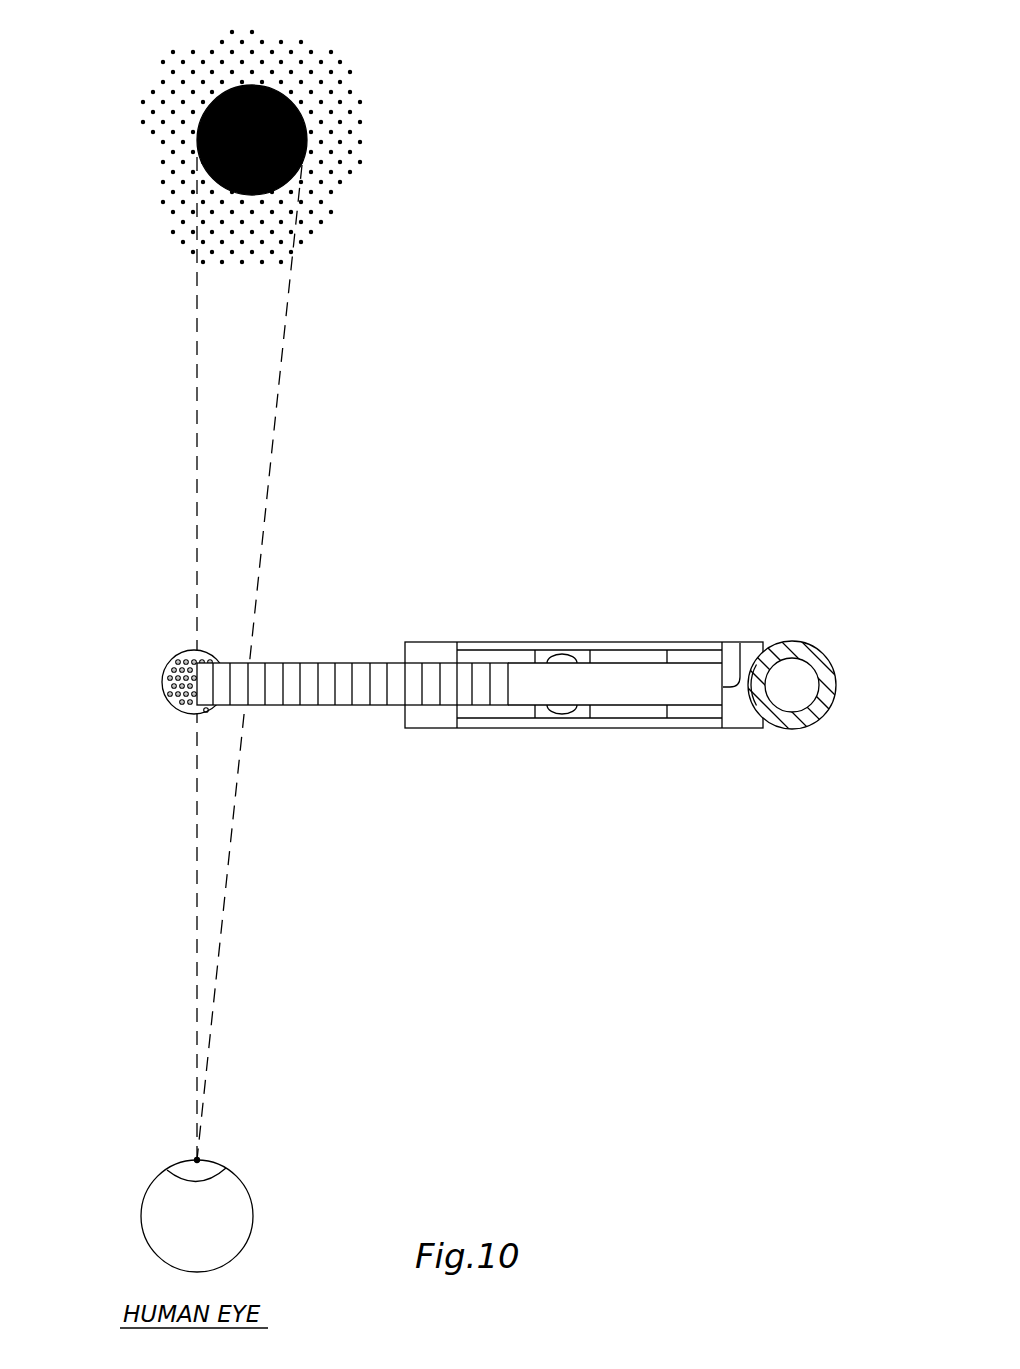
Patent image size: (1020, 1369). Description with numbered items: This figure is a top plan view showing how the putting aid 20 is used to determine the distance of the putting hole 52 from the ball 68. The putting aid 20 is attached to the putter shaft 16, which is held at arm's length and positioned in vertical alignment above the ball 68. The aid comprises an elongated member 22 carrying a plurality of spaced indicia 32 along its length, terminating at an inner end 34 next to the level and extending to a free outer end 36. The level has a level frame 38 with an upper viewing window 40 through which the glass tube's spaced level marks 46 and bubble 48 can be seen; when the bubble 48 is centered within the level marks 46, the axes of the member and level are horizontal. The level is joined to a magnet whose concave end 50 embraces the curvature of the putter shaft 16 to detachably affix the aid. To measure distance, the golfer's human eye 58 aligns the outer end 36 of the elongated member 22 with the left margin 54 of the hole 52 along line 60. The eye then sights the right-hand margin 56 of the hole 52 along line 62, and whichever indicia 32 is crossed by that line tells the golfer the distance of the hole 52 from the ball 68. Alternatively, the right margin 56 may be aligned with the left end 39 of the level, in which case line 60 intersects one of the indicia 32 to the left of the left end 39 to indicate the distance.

The putter shaft 16 is at (793, 642).
The putting aid 20 is at (186, 710).
The elongated member 22 is at (358, 711).
The indicia 32 is at (248, 706).
The inner end 34 is at (738, 643).
The outer end 36 is at (188, 685).
The level frame 38 is at (413, 641).
The left end 39 is at (403, 647).
The upper viewing window 40 is at (467, 648).
The level marks 46 is at (528, 652).
The bubble 48 is at (563, 652).
The concave end 50 is at (771, 648).
The putting hole 52 is at (218, 92).
The left margin 54 is at (200, 120).
The right-hand margin 56 is at (305, 120).
The human eye 58 is at (233, 1170).
The line 60 is at (195, 368).
The line 62 is at (282, 378).
The ball 68 is at (180, 650).